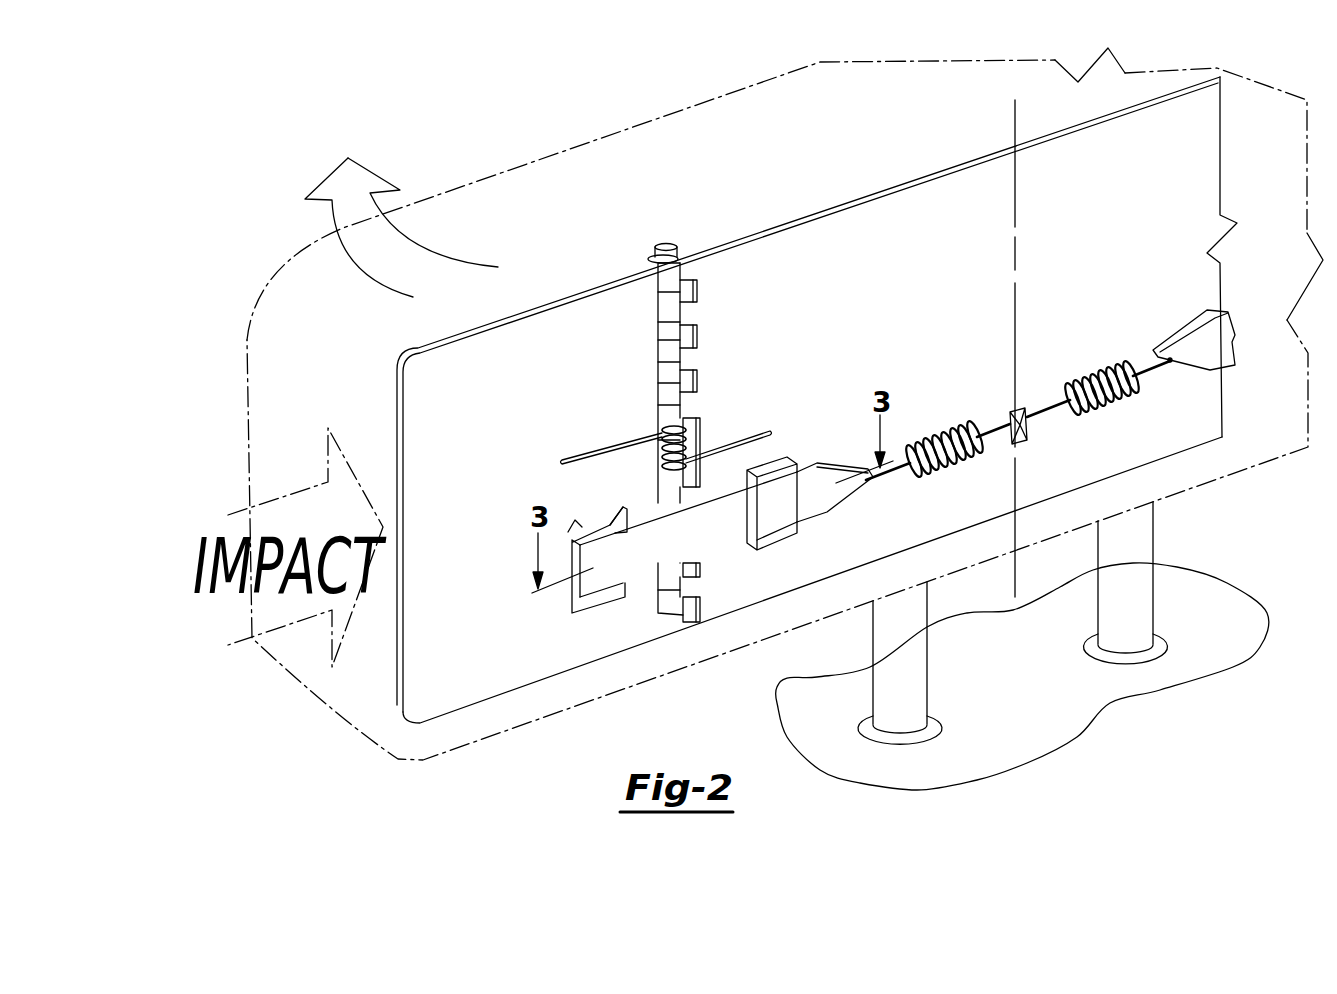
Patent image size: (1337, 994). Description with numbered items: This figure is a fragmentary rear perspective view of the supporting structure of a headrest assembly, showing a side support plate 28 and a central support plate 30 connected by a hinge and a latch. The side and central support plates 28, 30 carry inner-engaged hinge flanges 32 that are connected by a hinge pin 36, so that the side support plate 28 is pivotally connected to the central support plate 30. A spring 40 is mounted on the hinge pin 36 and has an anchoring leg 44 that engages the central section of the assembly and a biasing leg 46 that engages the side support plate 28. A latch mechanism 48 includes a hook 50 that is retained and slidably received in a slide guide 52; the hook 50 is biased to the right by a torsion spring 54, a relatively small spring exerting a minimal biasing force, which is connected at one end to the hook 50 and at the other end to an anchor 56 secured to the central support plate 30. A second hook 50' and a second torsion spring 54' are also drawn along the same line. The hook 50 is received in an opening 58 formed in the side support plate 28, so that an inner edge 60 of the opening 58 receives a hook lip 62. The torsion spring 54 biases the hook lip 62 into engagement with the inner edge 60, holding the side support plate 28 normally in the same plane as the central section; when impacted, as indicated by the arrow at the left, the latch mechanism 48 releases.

The side support plate 28 is at (438, 707).
The central support plate 30 is at (875, 223).
The hinge flanges 32 is at (667, 325).
The hinge pin 36 is at (667, 240).
The spring 40 is at (697, 436).
The anchoring leg 44 is at (762, 428).
The biasing leg 46 is at (608, 448).
The latch mechanism 48 is at (634, 628).
The hook 50 is at (726, 530).
The second slider plate 50' is at (1194, 316).
The slide guide 52 is at (780, 528).
The torsion spring 54 is at (944, 423).
The second coil spring 54' is at (1102, 366).
The anchor 56 is at (1018, 410).
The opening 58 is at (577, 528).
The inner edge 60 is at (615, 505).
The hook lip 62 is at (607, 530).